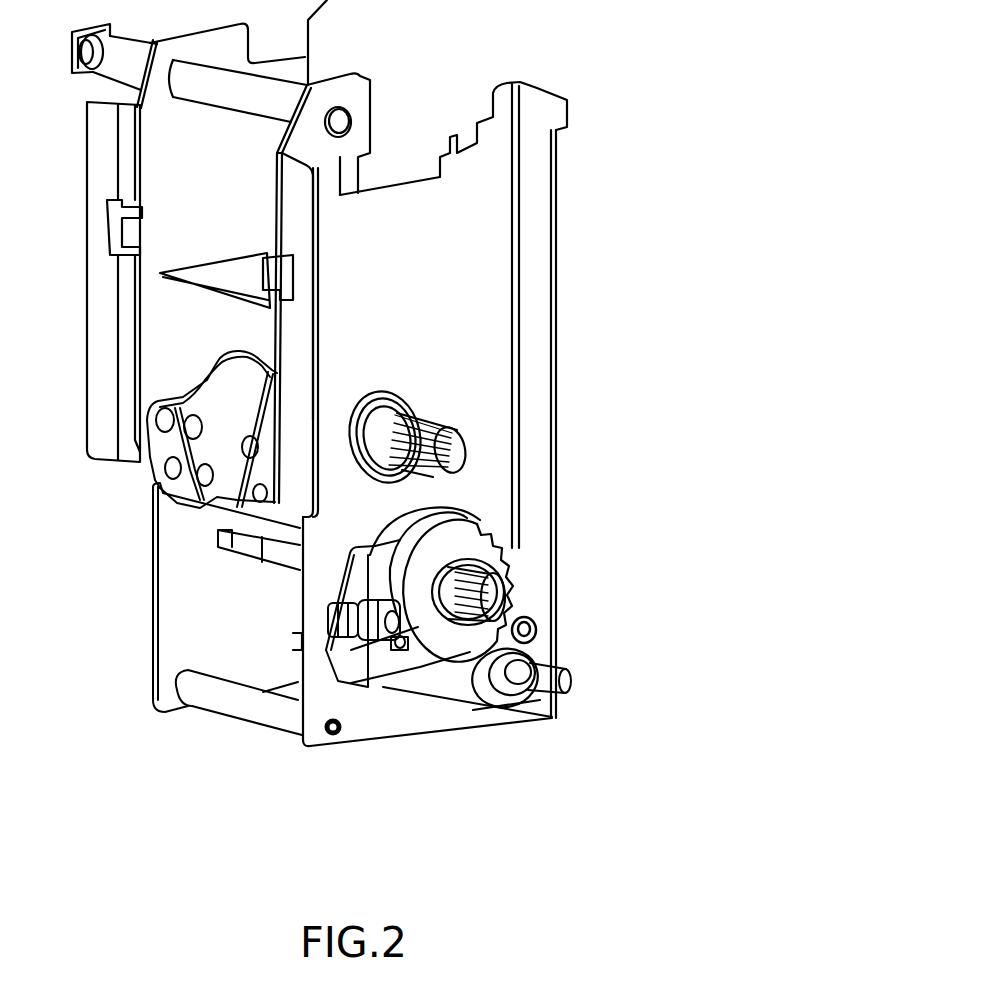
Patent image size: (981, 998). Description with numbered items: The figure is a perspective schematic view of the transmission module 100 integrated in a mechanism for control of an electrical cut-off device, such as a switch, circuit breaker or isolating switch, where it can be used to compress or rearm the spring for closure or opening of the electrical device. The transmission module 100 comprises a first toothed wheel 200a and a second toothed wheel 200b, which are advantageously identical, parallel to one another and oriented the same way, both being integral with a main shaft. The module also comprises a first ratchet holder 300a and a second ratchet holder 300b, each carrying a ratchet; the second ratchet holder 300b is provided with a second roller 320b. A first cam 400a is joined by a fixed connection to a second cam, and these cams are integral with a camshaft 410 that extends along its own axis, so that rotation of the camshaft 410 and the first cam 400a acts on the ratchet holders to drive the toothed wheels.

The transmission module 100 is at (655, 614).
The first toothed wheel 200a is at (483, 533).
The second toothed wheel 200b is at (430, 508).
The first ratchet holder 300a is at (383, 677).
The second ratchet holder 300b is at (347, 655).
The second roller 320b is at (538, 619).
The first cam 400a is at (477, 690).
The camshaft 410 is at (568, 688).